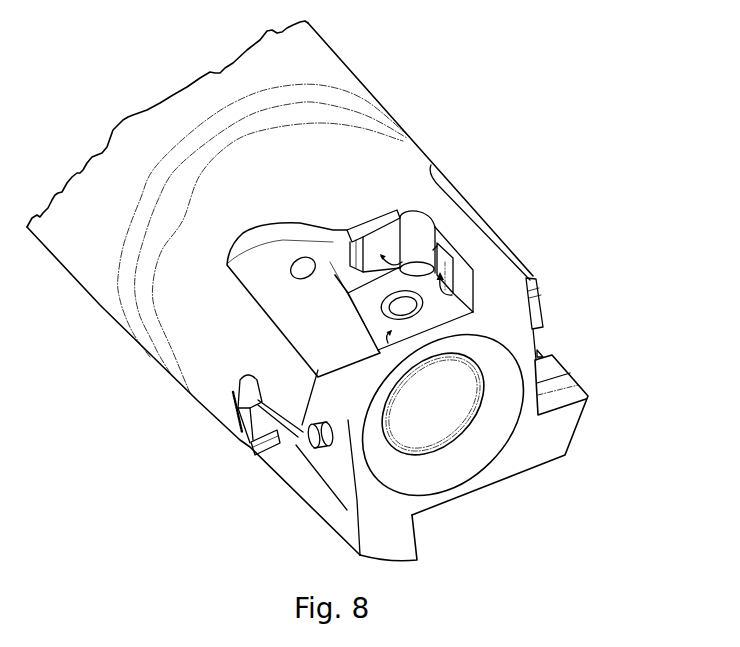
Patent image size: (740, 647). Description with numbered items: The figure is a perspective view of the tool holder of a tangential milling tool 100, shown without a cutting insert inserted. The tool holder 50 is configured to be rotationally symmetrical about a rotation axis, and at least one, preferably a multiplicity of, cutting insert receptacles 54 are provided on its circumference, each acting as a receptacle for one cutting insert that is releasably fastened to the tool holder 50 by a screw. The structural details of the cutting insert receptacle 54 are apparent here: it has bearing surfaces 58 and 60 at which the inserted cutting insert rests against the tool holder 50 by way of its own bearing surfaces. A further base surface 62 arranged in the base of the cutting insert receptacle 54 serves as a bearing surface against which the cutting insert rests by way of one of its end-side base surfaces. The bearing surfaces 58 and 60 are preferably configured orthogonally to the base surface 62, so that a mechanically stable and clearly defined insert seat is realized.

The tangential milling tool 100 is at (619, 138).
The tool holder 50 is at (374, 178).
The cutting insert receptacle 54 is at (440, 314).
The bearing surface 58 is at (433, 250).
The bearing surface 60 is at (448, 295).
The base surface 62 is at (348, 417).